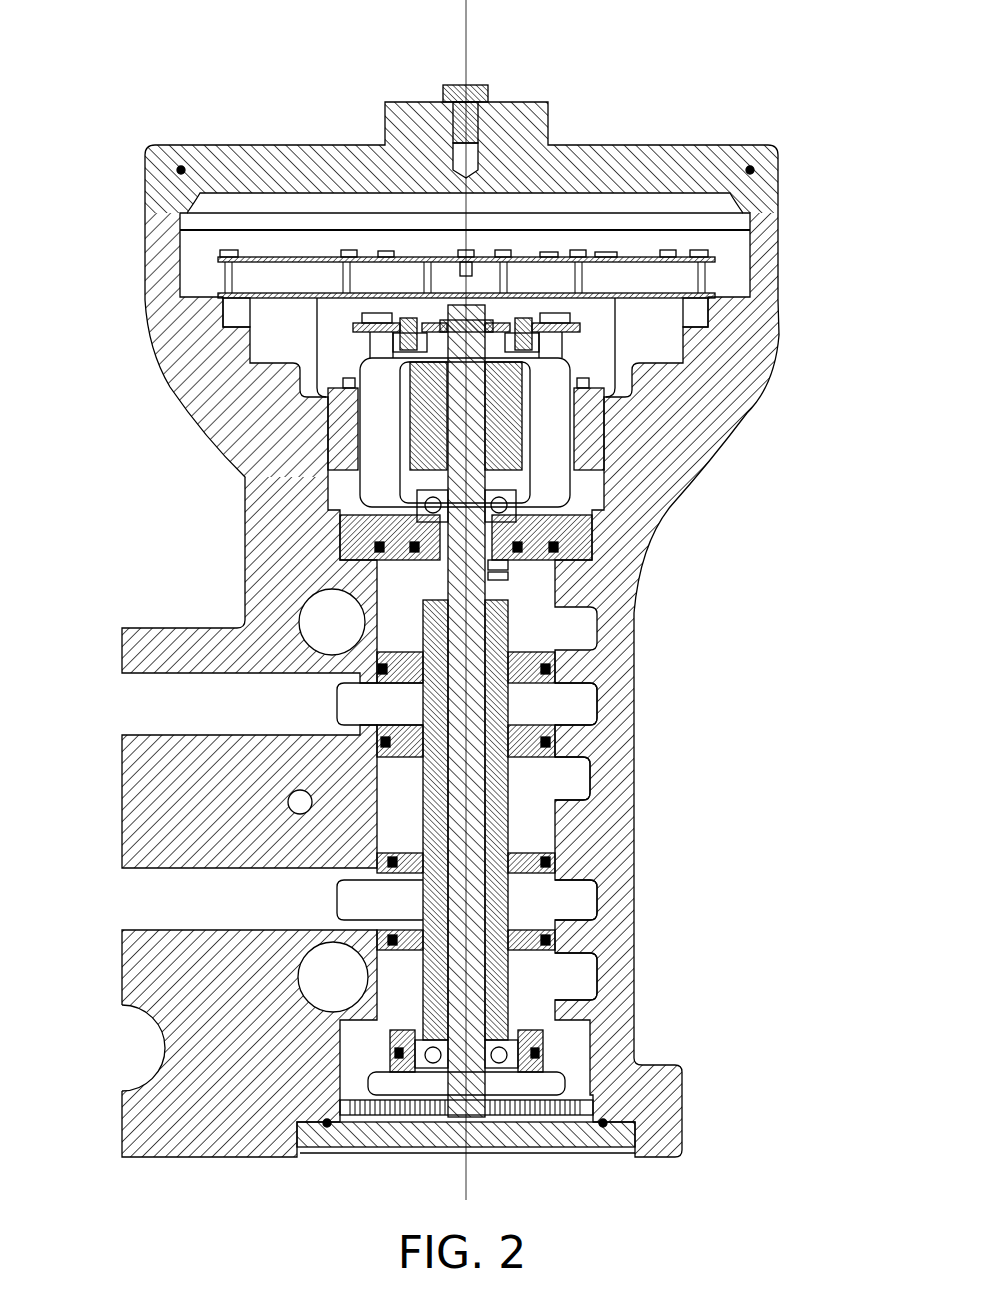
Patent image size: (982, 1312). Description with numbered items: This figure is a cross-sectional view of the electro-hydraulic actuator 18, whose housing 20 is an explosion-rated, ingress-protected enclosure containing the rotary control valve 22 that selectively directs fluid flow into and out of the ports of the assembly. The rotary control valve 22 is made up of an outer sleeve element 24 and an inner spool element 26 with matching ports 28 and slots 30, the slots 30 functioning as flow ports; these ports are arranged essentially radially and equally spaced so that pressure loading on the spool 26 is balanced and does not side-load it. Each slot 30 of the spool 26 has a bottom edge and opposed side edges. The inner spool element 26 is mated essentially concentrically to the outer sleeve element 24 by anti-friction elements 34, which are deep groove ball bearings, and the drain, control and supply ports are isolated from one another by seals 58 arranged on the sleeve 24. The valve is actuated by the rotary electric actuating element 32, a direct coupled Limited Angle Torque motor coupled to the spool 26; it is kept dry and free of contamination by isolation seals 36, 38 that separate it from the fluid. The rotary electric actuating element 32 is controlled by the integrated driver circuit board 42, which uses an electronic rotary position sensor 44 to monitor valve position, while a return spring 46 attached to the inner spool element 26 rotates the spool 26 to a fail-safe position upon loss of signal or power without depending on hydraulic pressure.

The actuator 18 is at (760, 100).
The housing 20 is at (785, 300).
The rotary control valve 22 is at (562, 980).
The outer sleeve element 24 is at (540, 688).
The inner spool element 26 is at (495, 760).
The ports 28 is at (440, 640).
The slots 30 is at (520, 878).
The rotary electric actuating element 32 is at (606, 438).
The anti-friction elements 34 is at (530, 482).
The isolation seal 36 is at (754, 172).
The isolation seal 38 is at (500, 565).
The integrated driver circuit board 42 is at (633, 292).
The electronic rotary position sensor 44 is at (445, 308).
The return spring 46 is at (555, 1112).
The seals 58 is at (548, 670).